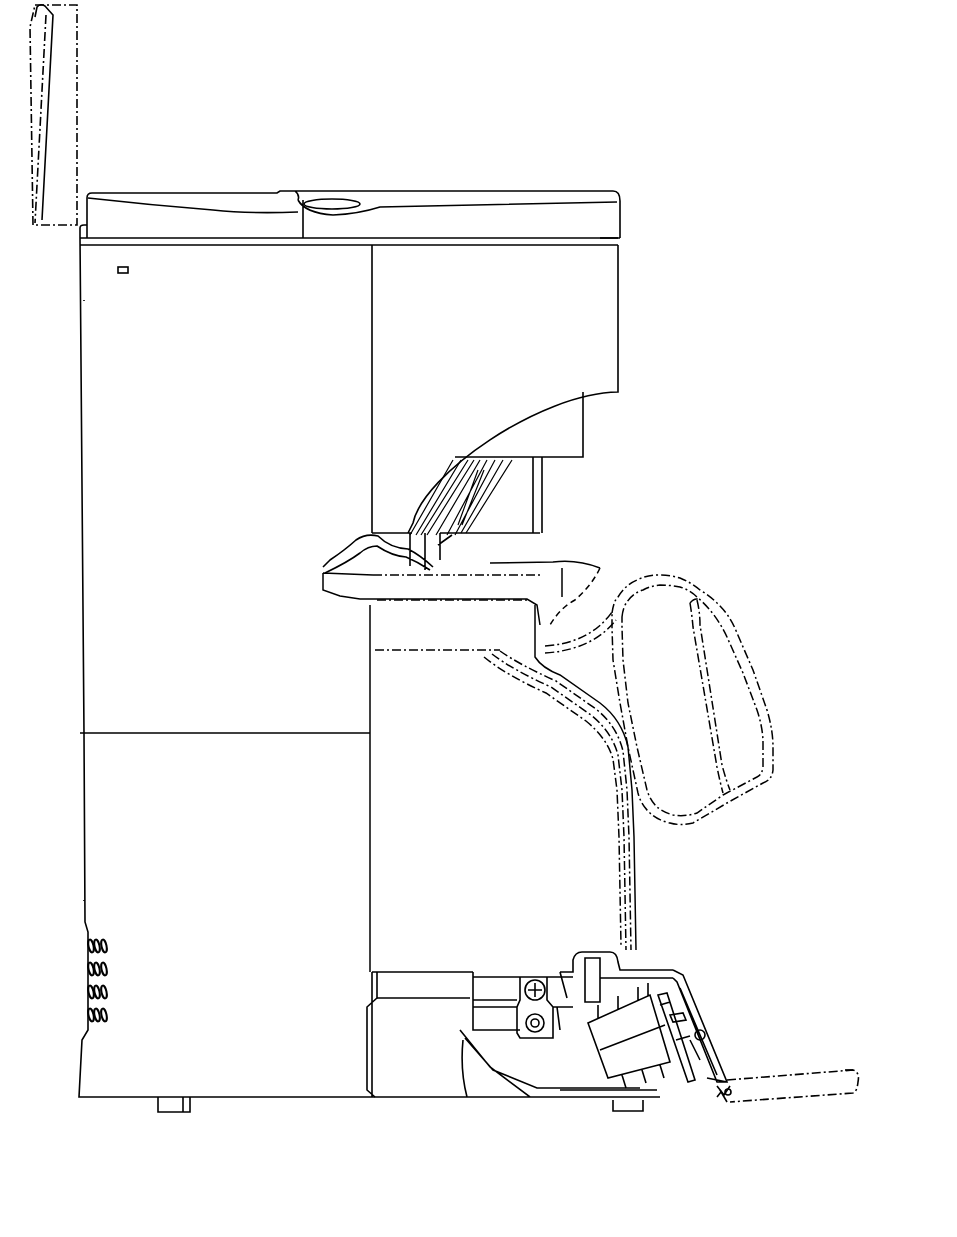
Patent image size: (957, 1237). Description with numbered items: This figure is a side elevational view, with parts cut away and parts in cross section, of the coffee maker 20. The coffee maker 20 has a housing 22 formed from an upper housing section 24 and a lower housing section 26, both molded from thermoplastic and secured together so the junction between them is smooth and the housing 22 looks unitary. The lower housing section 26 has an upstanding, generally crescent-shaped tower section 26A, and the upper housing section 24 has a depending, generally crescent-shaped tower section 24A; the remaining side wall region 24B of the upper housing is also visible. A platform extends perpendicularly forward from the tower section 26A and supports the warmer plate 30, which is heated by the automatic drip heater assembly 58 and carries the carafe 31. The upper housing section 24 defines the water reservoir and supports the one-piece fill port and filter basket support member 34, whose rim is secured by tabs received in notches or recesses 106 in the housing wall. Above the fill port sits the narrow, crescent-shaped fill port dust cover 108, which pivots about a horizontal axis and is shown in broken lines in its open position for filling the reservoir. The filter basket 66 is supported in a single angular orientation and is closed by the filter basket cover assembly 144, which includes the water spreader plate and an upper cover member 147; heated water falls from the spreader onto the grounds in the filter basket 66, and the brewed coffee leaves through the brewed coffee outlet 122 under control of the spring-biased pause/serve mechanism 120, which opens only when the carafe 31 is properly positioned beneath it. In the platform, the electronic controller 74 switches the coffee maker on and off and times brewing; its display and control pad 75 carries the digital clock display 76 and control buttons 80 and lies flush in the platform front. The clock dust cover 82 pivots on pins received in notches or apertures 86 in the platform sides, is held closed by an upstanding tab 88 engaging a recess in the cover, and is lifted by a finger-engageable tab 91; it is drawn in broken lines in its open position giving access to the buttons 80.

The filter basket cover assembly 144 is at (633, 168).
The coffee maker 20 is at (675, 367).
The housing 22 is at (103, 517).
The upper housing section 24 is at (88, 411).
The tower section of upper housing section 24A is at (232, 453).
The upper housing side wall 24B is at (494, 349).
The lower housing section 26 is at (103, 829).
The tower section of lower housing section 26A is at (240, 911).
The warmer plate 30 is at (617, 952).
The carafe 31 is at (528, 760).
The fill port and filter basket support member 34 is at (618, 242).
The automatic drip heater assembly 58 is at (535, 1031).
The filter basket 66 is at (540, 503).
The electronic controller 74 is at (637, 1047).
The display and control pad 75 is at (723, 1057).
The digital clock display 76 is at (710, 1010).
The control buttons 80 is at (717, 1037).
The clock dust cover 82 is at (800, 1102).
The notches or apertures 86 is at (723, 1102).
The upstanding tab 88 is at (687, 978).
The finger-engageable tab 91 is at (853, 1070).
The notches or recesses 106 is at (128, 272).
The fill port dust cover 108 is at (77, 72).
The pause/serve mechanism 120 is at (325, 570).
The brewed coffee outlet 122 is at (428, 543).
The upper cover member 147 is at (449, 195).